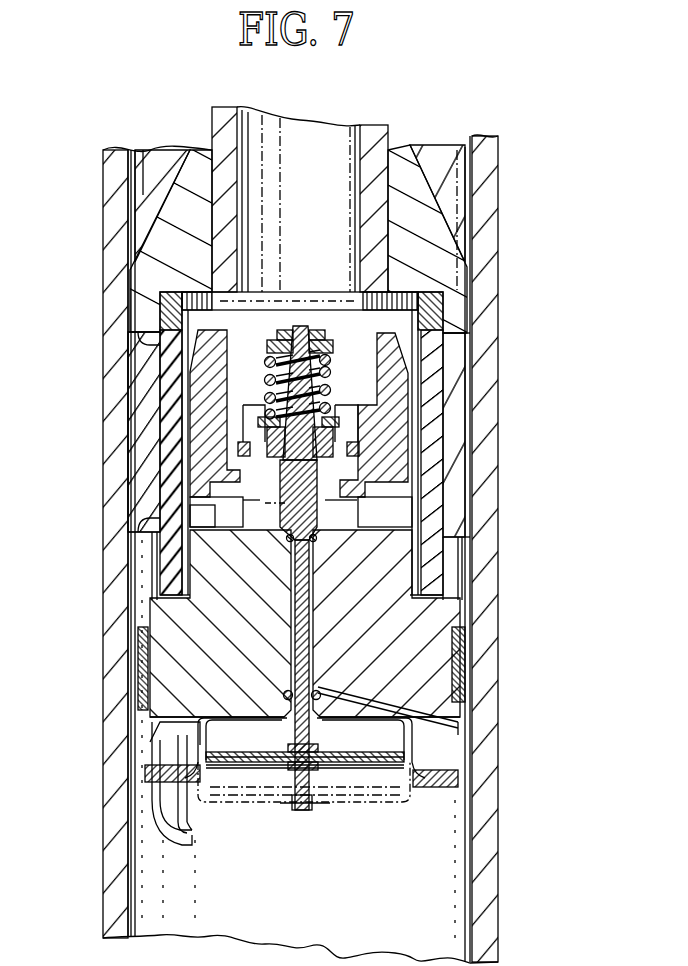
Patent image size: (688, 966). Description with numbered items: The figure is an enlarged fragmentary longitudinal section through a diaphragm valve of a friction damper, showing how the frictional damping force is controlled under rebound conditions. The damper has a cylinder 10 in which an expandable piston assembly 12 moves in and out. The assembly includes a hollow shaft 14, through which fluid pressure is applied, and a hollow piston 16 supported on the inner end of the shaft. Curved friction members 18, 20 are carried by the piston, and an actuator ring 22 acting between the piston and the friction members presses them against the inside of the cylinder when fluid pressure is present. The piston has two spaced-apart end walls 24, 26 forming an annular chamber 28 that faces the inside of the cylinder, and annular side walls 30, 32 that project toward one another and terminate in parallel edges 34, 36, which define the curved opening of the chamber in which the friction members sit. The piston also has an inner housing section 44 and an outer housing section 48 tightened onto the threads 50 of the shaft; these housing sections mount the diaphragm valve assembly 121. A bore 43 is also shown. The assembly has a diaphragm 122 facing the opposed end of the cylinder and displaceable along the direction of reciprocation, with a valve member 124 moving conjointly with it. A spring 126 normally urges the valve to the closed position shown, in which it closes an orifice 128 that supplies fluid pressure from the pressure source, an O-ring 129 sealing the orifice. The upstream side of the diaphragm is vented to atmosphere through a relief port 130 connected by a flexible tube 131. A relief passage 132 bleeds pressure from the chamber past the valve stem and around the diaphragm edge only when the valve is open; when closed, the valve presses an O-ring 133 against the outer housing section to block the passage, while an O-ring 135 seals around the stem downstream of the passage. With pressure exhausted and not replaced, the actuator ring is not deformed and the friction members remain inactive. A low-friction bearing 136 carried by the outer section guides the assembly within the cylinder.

The cylinder 10 is at (480, 717).
The expandable piston assembly 12 is at (208, 96).
The hollow shaft 14 is at (382, 130).
The hollow piston 16 is at (178, 640).
The friction member 18 is at (130, 428).
The friction member 20 is at (455, 508).
The actuator ring 22 is at (438, 468).
The end wall 24 is at (392, 292).
The end wall 26 is at (305, 739).
The annular chamber 28 is at (168, 300).
The annular side wall 30 is at (520, 318).
The annular side wall 32 is at (455, 572).
The edge 34 is at (140, 338).
The edge 36 is at (133, 522).
The bore 43 is at (263, 512).
The inner housing section 44 is at (430, 215).
The outer housing section 48 is at (243, 664).
The threads 50 is at (235, 422).
The diaphragm valve assembly 121 is at (272, 555).
The diaphragm 122 is at (197, 765).
The valve member 124 is at (313, 495).
The spring 126 is at (332, 388).
The orifice 128 is at (250, 497).
The O-ring 129 is at (340, 452).
The relief port 130 is at (180, 735).
The flexible tube 131 is at (182, 845).
The relief passage 132 is at (343, 690).
The O-ring 133 is at (316, 542).
The O-ring 135 is at (320, 700).
The bearing 136 is at (458, 660).